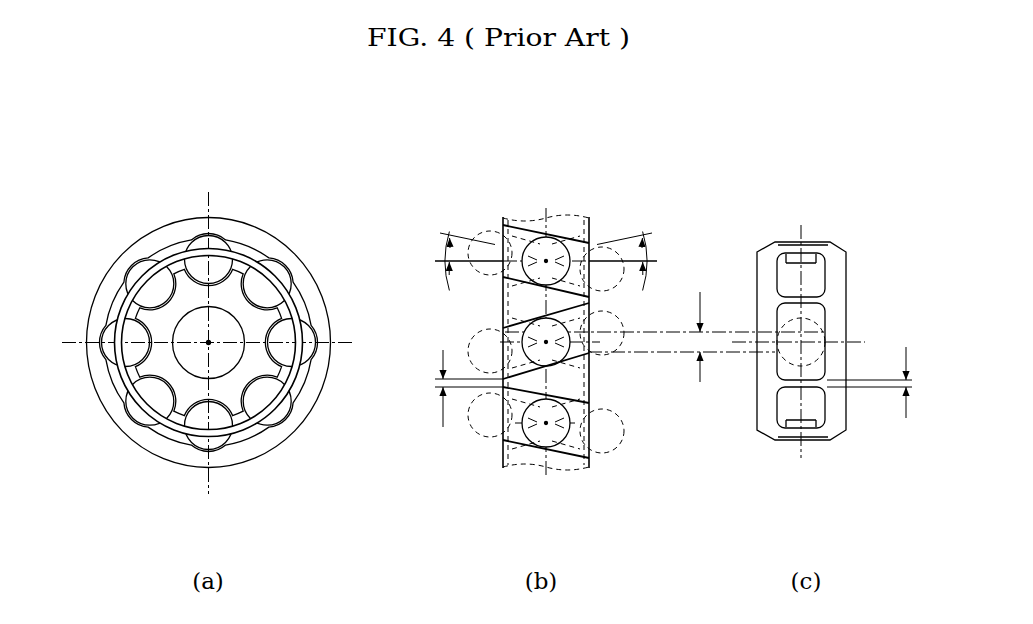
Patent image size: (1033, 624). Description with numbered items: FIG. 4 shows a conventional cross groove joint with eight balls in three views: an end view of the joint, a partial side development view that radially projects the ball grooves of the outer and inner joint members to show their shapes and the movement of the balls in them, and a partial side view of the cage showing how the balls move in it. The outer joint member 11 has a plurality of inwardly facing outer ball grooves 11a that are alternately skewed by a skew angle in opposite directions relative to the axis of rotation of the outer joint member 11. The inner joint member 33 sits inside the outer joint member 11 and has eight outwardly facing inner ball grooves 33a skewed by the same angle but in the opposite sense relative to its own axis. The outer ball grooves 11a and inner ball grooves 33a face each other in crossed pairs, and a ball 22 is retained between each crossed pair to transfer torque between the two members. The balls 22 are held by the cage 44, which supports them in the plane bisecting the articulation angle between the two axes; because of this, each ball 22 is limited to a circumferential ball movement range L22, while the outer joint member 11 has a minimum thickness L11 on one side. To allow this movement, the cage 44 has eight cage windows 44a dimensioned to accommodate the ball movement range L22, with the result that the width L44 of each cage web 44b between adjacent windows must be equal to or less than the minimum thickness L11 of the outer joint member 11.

The outer joint member 11 is at (188, 212).
The outer ball grooves 11a is at (180, 232).
The balls 22 is at (226, 254).
The inner joint member 33 is at (286, 272).
The inner ball grooves 33a is at (250, 265).
The cage 44 is at (306, 346).
The cage windows 44a is at (810, 408).
The cage web 44b is at (815, 301).
The minimum thickness of outer joint member L11 is at (462, 398).
The ball movement range L22 is at (699, 327).
The width of cage web L44 is at (874, 371).